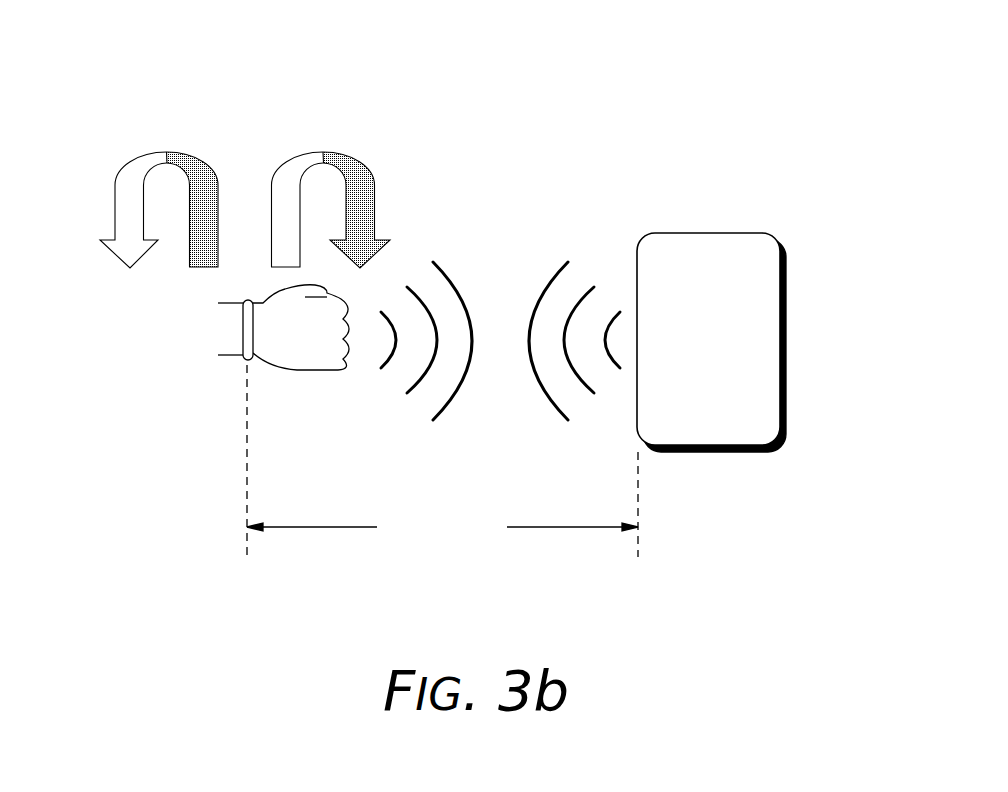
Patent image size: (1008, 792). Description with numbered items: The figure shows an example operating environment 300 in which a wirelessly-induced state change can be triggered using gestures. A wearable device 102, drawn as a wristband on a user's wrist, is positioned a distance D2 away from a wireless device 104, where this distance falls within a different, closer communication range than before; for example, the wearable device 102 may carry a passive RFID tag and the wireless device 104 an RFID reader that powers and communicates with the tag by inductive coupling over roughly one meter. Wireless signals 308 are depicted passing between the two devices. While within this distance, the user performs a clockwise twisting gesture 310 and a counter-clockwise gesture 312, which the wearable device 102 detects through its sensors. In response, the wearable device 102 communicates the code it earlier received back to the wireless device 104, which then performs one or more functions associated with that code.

The operating environment 300 is at (510, 76).
The counter-clockwise gesture 312 is at (128, 145).
The clockwise twisting gesture 310 is at (313, 145).
The wearable device 102 is at (242, 363).
The wireless signals 308 is at (433, 253).
The wireless device 104 is at (696, 342).